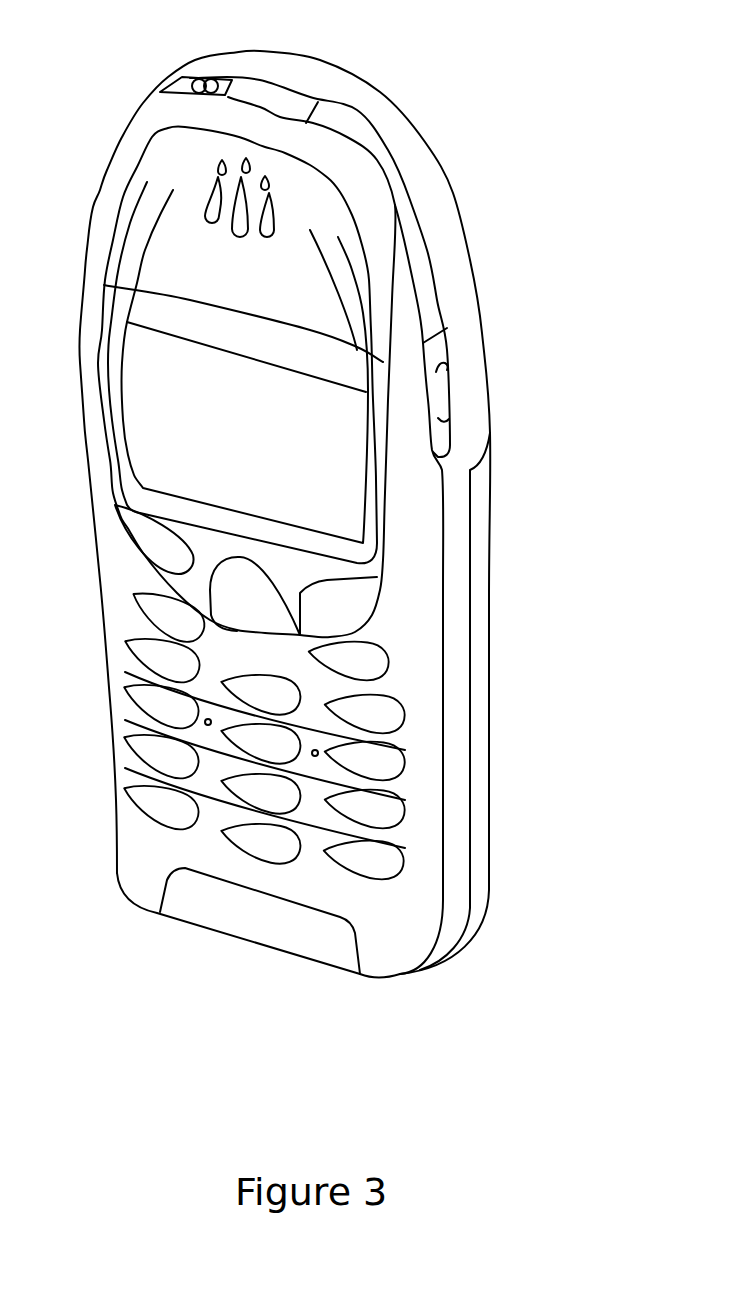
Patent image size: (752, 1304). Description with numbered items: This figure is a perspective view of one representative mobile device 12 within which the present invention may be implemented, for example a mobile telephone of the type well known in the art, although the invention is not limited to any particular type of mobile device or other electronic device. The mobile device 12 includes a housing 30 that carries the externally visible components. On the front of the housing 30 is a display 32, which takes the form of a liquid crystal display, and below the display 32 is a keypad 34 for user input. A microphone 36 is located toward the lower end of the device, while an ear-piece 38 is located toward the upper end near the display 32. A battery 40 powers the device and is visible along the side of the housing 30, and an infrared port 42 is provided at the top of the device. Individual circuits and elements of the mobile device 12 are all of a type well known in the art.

The mobile telephone 12 is at (309, 524).
The housing 30 is at (451, 250).
The display 32 is at (335, 482).
The keypad 34 is at (360, 862).
The bottom panel 36 is at (192, 908).
The speaker apertures 38 is at (210, 193).
The battery cover 40 is at (482, 840).
The front panel 42 is at (272, 90).